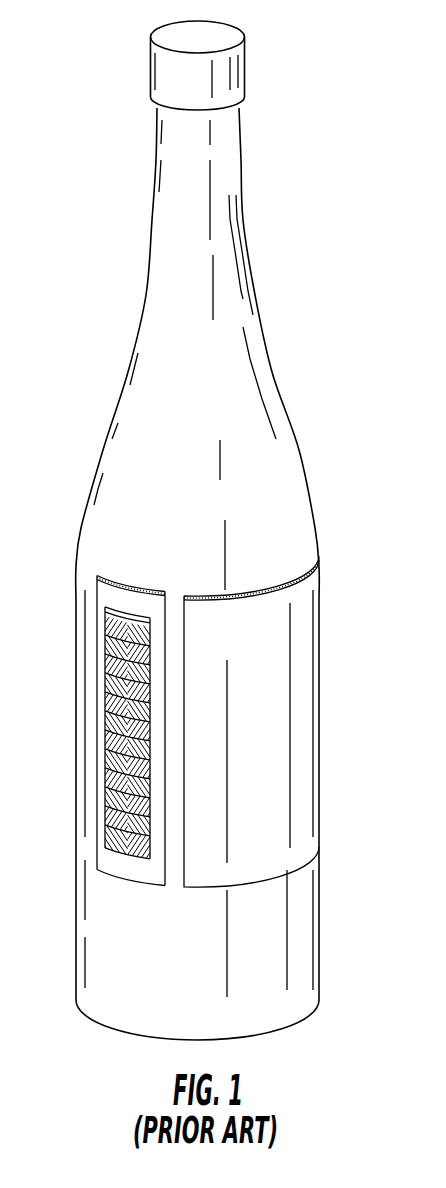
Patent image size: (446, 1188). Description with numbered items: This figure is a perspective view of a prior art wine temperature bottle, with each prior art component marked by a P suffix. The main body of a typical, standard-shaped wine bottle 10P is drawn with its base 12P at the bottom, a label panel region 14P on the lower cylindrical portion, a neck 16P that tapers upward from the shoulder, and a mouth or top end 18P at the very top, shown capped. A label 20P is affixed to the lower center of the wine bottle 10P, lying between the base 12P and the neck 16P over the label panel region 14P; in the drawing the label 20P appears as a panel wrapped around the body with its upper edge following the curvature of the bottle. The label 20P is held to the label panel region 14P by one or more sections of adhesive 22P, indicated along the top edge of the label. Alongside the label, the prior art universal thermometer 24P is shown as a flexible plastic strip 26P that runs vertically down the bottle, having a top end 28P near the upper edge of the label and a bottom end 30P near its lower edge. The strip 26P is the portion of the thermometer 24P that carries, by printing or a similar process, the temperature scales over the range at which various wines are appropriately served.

The wine bottle 10P is at (320, 455).
The base 12P is at (290, 1012).
The label panel region 14P is at (209, 954).
The neck 16P is at (253, 303).
The mouth or top end 18P is at (233, 97).
The label 20P is at (273, 741).
The adhesive 22P is at (207, 593).
The universal thermometer 24P is at (111, 594).
The flexible plastic strip 26P is at (103, 690).
The top end 28P is at (153, 610).
The bottom end 30P is at (152, 873).